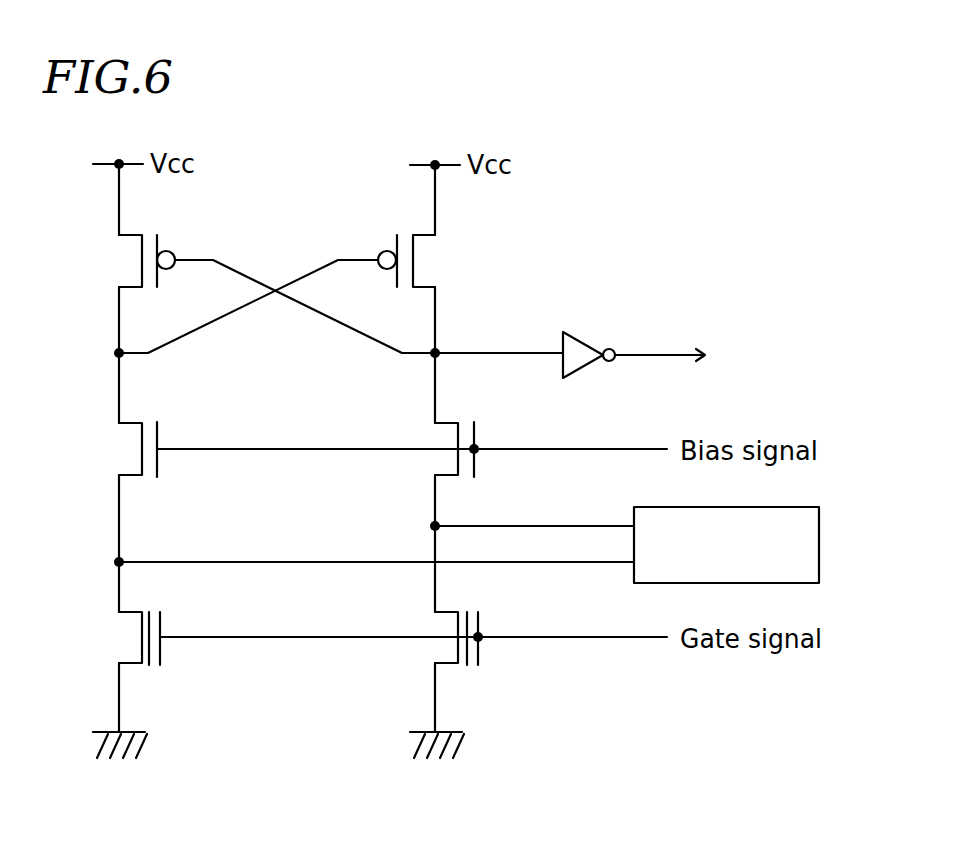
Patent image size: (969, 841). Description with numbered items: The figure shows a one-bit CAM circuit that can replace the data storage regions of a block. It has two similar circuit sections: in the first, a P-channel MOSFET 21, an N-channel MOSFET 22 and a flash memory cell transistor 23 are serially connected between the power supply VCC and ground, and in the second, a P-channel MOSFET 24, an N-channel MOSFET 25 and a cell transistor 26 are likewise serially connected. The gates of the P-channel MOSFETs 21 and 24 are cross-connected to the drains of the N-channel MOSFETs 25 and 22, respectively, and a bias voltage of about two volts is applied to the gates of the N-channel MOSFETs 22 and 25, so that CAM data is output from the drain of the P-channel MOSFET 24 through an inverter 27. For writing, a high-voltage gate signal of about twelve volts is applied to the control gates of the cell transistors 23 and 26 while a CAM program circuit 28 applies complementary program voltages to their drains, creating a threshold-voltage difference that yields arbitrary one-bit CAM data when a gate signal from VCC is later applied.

The P-channel MOSFET 21 is at (150, 237).
The N-channel MOSFET 22 is at (152, 422).
The cell transistor 23 is at (162, 623).
The P-channel MOSFET 24 is at (403, 233).
The N-channel MOSFET 25 is at (468, 422).
The cell transistor 26 is at (480, 625).
The inverter 27 is at (578, 345).
The CAM program circuit 28 is at (810, 562).